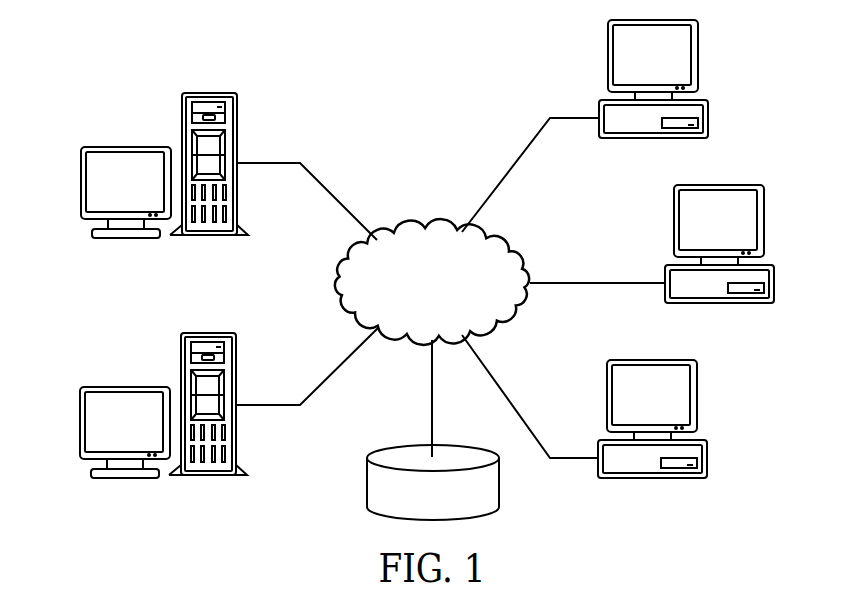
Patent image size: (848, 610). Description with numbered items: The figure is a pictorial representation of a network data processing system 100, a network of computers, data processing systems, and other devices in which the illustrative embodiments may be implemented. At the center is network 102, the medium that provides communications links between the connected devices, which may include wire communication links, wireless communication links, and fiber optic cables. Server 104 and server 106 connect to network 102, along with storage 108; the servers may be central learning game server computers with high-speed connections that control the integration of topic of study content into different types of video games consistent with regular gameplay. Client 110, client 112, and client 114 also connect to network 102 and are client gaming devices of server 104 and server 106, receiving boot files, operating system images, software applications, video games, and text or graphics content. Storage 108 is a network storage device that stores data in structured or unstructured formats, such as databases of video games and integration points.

The network data processing system 100 is at (303, 74).
The network 102 is at (429, 228).
The server 104 is at (80, 181).
The server 106 is at (79, 425).
The storage 108 is at (366, 486).
The client 110 is at (708, 108).
The client 112 is at (775, 295).
The client 114 is at (708, 470).